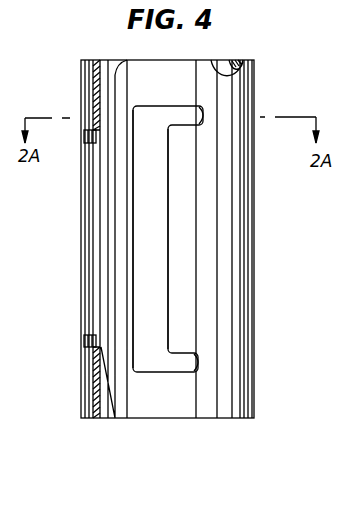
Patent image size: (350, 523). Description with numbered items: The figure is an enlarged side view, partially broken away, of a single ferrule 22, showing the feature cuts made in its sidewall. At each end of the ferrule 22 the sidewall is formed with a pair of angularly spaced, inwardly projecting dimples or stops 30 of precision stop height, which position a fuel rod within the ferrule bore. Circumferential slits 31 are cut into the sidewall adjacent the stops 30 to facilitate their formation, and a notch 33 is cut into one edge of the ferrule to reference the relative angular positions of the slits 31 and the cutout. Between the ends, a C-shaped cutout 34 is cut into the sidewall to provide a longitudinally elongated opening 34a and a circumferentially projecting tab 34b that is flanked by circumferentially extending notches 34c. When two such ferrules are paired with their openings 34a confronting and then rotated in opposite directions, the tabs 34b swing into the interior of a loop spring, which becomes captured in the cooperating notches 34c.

The ferrule 22 is at (233, 269).
The stops 30 is at (102, 130).
The circumferential slits 31 is at (88, 141).
The notch 33 is at (227, 64).
The C-shaped cutout 34 is at (140, 208).
The longitudinally elongated opening 34a is at (158, 218).
The circumferentially projecting tab 34b is at (170, 167).
The circumferentially extending notches 34c is at (201, 108).